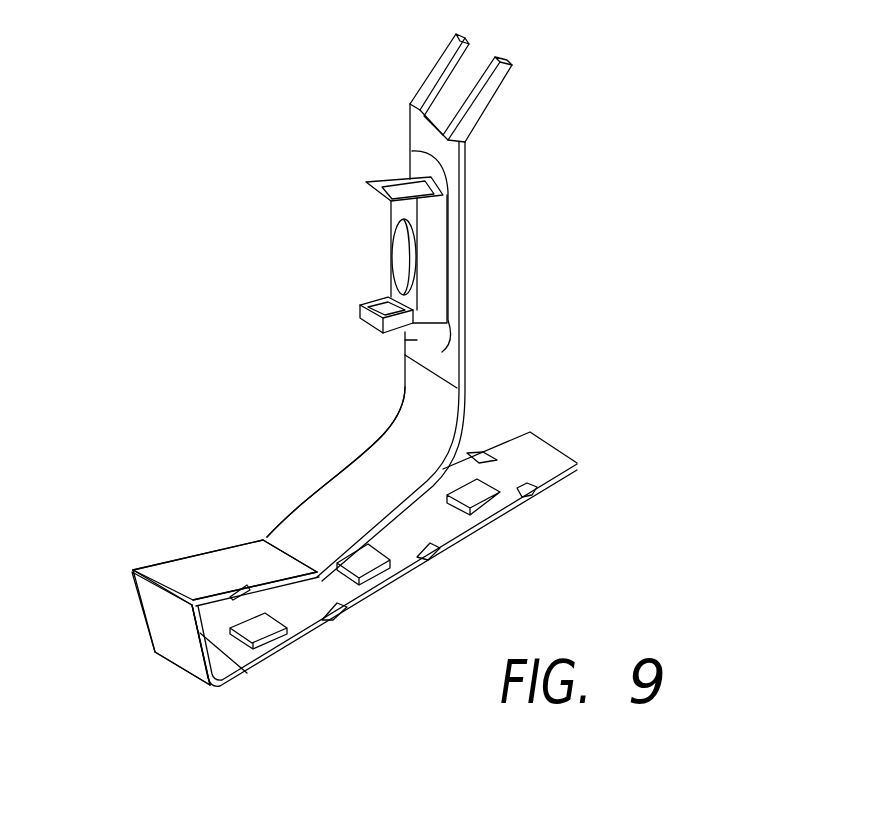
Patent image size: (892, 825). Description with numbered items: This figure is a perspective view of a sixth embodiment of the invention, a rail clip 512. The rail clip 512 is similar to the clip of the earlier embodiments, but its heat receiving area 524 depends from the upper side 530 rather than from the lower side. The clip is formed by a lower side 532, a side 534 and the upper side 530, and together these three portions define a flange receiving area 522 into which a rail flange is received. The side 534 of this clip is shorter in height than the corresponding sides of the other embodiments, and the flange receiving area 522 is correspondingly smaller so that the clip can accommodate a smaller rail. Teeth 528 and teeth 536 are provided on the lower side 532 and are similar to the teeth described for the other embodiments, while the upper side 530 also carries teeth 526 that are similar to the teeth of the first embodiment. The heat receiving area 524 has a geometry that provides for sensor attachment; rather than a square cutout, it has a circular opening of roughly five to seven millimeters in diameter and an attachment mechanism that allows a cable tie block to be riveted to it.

The rail clip 512 is at (372, 360).
The flange receiving area 522 is at (460, 457).
The heat receiving area 524 is at (375, 199).
The teeth 526 is at (192, 558).
The teeth 528 is at (520, 487).
The upper side 530 is at (357, 531).
The lower side 532 is at (449, 538).
The side 534 is at (155, 627).
The teeth 536 is at (260, 628).